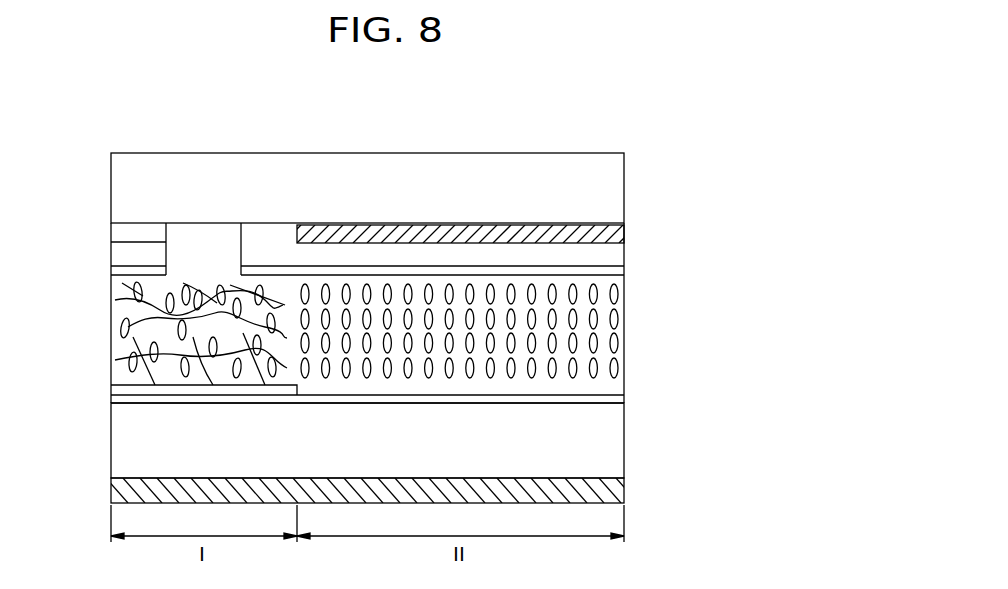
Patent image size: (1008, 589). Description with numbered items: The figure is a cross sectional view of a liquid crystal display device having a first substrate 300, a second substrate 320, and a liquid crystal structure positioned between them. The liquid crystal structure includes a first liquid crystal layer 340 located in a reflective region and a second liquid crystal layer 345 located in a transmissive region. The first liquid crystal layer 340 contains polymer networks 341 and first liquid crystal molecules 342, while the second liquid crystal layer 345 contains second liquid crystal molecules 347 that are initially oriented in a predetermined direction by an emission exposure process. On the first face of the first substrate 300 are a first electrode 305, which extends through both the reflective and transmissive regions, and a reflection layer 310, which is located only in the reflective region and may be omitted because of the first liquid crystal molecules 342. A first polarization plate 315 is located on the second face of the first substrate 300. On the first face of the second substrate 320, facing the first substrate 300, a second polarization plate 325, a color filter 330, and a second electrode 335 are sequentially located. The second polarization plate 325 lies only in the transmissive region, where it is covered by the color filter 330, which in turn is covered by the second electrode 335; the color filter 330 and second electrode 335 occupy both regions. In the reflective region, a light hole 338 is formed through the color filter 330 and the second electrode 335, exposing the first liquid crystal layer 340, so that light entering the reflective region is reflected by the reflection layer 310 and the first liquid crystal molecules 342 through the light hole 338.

The first substrate 300 is at (624, 443).
The first electrode 305 is at (624, 399).
The reflection layer 310 is at (111, 388).
The first polarization plate 315 is at (624, 490).
The second substrate 320 is at (624, 176).
The second polarization plate 325 is at (619, 237).
The color filter 330 is at (619, 256).
The second electrode 335 is at (619, 273).
The light hole 338 is at (212, 240).
The first liquid crystal layer 340 is at (146, 330).
The polymer networks 341 is at (120, 333).
The first liquid crystal molecules 342 is at (120, 325).
The second liquid crystal layer 345 is at (517, 336).
The second liquid crystal molecules 347 is at (616, 320).